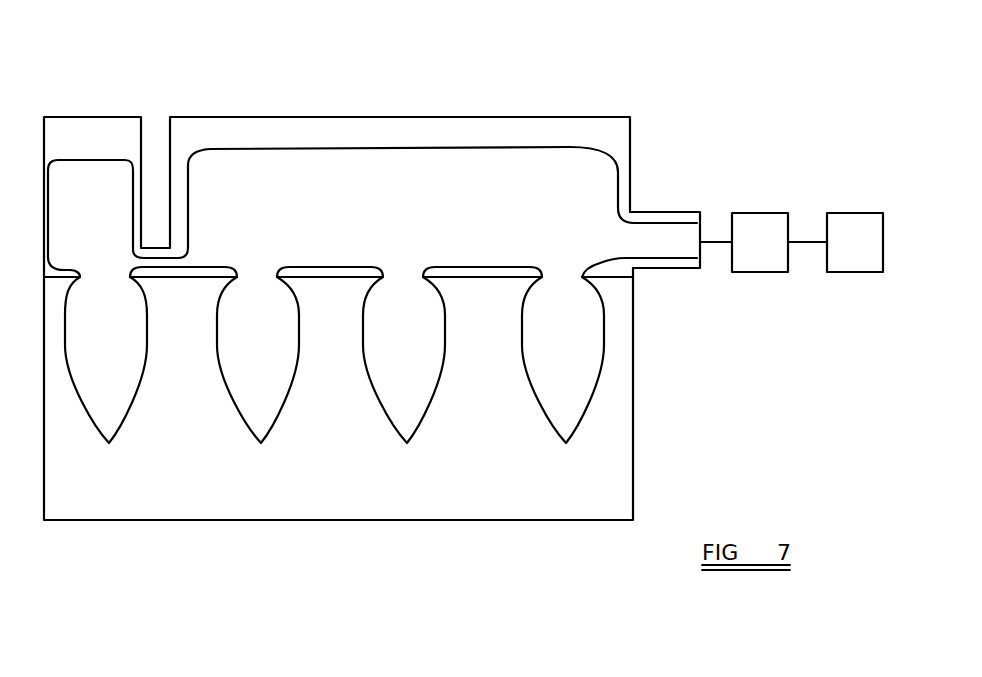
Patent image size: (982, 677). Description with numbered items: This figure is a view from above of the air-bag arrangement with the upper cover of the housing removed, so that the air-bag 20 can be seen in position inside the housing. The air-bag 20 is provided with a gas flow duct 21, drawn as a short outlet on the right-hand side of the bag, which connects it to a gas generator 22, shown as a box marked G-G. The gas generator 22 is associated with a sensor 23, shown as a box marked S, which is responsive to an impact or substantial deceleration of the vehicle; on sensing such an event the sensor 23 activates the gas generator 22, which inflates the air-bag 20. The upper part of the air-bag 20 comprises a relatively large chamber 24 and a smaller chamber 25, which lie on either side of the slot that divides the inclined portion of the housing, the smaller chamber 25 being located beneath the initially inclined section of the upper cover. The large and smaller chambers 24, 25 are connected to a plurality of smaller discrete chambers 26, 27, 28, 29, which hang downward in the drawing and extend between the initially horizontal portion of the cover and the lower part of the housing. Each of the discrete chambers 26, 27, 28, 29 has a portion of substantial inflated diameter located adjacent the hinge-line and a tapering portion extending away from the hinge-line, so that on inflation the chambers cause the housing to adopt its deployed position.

The air-bag 20 is at (603, 180).
The gas flow duct 21 is at (670, 242).
The gas generator 22 is at (758, 272).
The sensor 23 is at (845, 272).
The large chamber 24 is at (437, 157).
The smaller chamber 25 is at (102, 172).
The discrete chamber 26 is at (123, 412).
The discrete chamber 27 is at (277, 412).
The discrete chamber 28 is at (427, 403).
The discrete chamber 29 is at (583, 403).